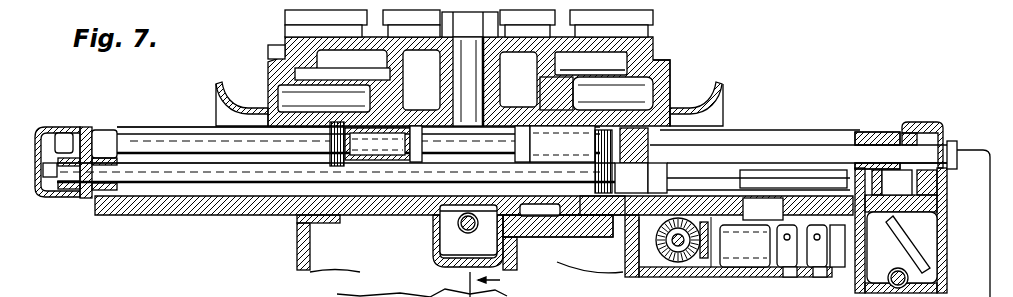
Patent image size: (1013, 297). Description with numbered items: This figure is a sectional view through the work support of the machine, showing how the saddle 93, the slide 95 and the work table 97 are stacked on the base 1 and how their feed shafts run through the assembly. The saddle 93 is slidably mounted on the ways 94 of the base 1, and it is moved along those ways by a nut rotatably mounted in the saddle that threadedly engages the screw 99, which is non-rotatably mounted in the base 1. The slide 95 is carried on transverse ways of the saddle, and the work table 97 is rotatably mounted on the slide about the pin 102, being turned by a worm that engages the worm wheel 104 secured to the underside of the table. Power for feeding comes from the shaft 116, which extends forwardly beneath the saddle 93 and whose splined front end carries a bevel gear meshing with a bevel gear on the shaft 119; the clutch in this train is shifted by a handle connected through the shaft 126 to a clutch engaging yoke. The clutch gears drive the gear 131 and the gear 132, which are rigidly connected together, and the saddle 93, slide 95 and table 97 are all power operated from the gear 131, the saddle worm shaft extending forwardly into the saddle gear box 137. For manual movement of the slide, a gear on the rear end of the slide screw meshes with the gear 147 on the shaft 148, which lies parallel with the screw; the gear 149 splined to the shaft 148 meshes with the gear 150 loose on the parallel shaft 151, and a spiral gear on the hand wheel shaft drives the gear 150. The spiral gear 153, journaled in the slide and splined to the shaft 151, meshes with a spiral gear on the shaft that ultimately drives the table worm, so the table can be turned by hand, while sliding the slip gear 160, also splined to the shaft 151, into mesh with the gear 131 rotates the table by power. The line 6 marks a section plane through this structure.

The base 1 is at (297, 249).
The section line 6 is at (491, 284).
The saddle 93 is at (135, 203).
The ways 94 is at (538, 214).
The slide 95 is at (672, 88).
The work table 97 is at (625, 20).
The screw 99 is at (466, 229).
The pin 102 is at (470, 84).
The worm wheel 104 is at (568, 98).
The shaft 116 is at (682, 245).
The shaft 119 is at (782, 251).
The shaft 126 is at (908, 283).
The gear 131 is at (927, 247).
The gear 132 is at (850, 165).
The saddle gear box 137 is at (936, 124).
The gear 147 is at (65, 188).
The shaft 148 is at (187, 172).
The gear 149 is at (585, 214).
The gear 150 is at (663, 133).
The shaft 151 is at (163, 150).
The spiral gear 153 is at (337, 122).
The slip gear 160 is at (908, 132).